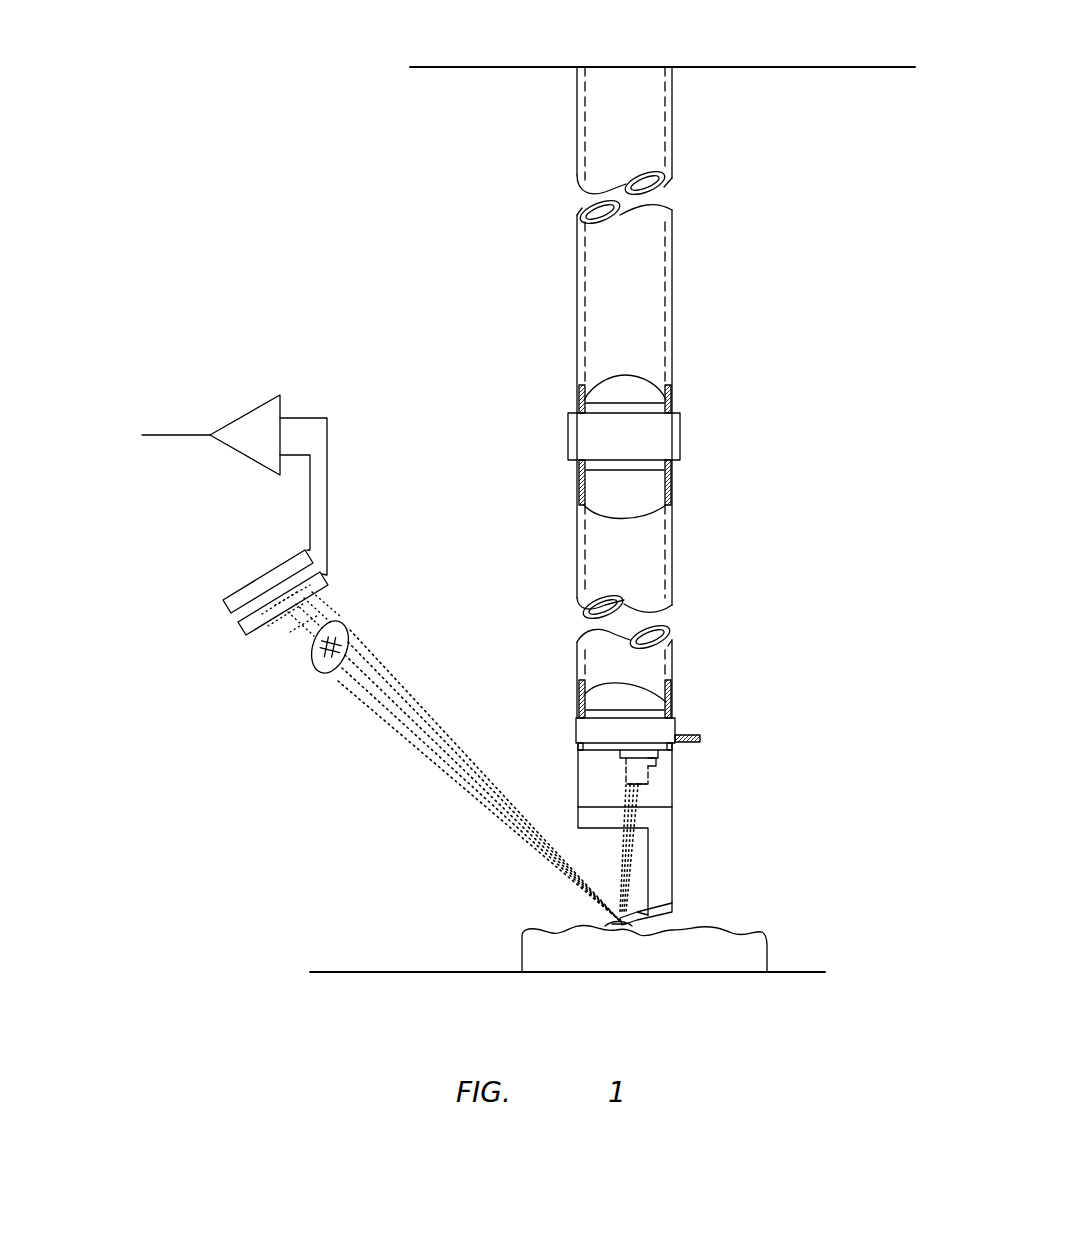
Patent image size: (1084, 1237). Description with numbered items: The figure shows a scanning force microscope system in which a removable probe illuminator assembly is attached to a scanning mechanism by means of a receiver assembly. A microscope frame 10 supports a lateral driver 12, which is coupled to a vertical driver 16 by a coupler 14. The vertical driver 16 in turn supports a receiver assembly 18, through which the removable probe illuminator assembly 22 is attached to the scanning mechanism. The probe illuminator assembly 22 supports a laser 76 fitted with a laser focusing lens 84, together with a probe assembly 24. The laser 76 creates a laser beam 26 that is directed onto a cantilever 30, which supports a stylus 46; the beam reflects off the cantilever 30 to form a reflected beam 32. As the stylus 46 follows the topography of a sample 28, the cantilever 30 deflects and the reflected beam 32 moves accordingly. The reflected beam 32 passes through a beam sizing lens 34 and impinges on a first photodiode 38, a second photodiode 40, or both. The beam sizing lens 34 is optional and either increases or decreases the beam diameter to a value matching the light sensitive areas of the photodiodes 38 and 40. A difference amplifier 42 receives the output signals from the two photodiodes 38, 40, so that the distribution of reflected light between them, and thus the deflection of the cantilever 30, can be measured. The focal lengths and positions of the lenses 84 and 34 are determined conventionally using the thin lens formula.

The microscope frame 10 is at (738, 50).
The lateral driver 12 is at (637, 313).
The coupler 14 is at (665, 437).
The vertical driver 16 is at (612, 556).
The receiver assembly 18 is at (703, 722).
The removable probe illuminator assembly 22 is at (688, 795).
The probe assembly 24 is at (688, 907).
The laser beam 26 is at (623, 893).
The sample 28 is at (757, 952).
The cantilever 30 is at (615, 915).
The reflected beam 32 is at (478, 785).
The beam sizing lens 34 is at (310, 655).
The first photodiode 38 is at (240, 633).
The second photodiode 40 is at (233, 606).
The difference amplifier 42 is at (250, 425).
The stylus 46 is at (615, 925).
The laser 76 is at (650, 770).
The laser focusing lens 84 is at (640, 787).